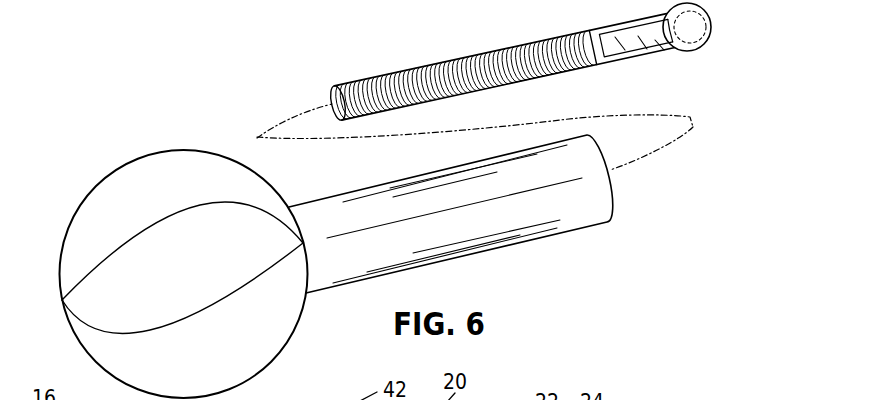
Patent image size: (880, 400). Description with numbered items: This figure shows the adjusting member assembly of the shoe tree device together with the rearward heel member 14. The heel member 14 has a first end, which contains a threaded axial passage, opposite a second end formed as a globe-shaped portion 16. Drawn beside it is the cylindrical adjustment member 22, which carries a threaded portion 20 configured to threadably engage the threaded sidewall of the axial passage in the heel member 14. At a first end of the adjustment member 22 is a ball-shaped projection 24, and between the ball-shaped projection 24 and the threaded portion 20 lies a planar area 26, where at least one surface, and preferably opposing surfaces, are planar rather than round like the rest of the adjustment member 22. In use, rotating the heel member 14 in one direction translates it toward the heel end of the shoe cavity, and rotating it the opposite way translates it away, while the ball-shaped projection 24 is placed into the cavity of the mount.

The heel member 14 is at (288, 207).
The globe-shaped portion 16 is at (128, 185).
The threaded portion 20 is at (383, 78).
The adjustment member 22 is at (593, 29).
The ball-shaped projection 24 is at (697, 24).
The planar area 26 is at (635, 48).